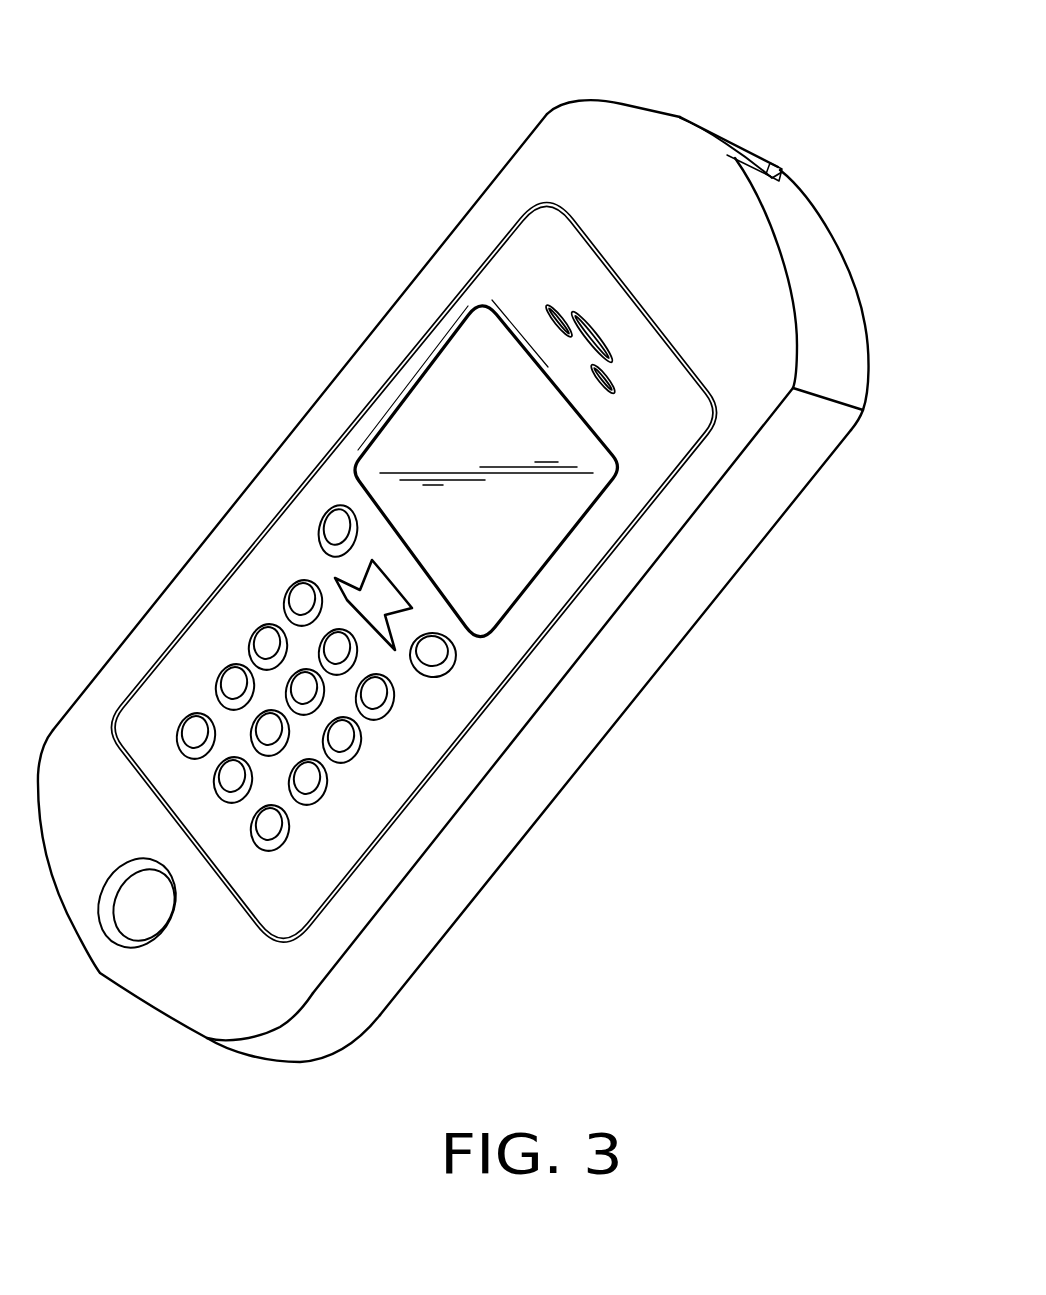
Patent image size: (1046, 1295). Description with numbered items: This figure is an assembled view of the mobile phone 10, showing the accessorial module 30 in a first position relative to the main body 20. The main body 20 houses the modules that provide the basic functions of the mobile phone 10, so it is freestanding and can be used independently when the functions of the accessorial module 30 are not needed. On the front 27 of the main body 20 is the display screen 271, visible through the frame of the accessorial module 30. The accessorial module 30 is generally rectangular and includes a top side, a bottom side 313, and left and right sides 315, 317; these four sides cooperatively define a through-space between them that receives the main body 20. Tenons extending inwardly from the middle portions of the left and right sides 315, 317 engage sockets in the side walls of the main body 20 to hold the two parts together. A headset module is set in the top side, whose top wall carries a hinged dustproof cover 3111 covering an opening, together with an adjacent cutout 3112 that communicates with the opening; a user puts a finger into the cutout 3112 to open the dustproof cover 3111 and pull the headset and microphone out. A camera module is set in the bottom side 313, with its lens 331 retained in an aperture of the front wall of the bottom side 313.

The mobile phone 10 is at (583, 40).
The main body 20 is at (665, 438).
The front 27 is at (523, 255).
The display screen 271 is at (458, 365).
The accessorial module 30 is at (673, 604).
The bottom side 313 is at (230, 997).
The left side 315 is at (273, 490).
The right side 317 is at (497, 735).
The lens 331 is at (138, 910).
The dustproof cover 3111 is at (733, 140).
The cutout 3112 is at (780, 165).